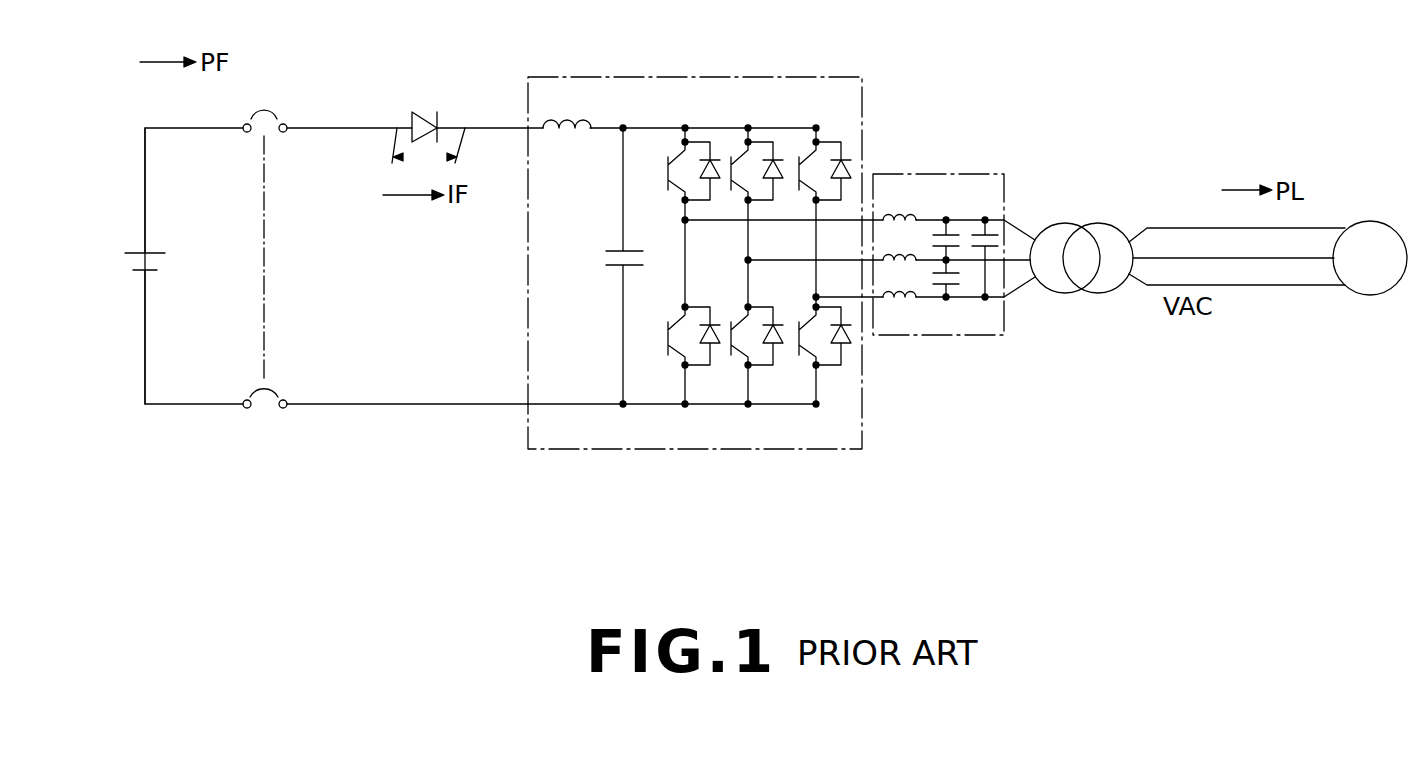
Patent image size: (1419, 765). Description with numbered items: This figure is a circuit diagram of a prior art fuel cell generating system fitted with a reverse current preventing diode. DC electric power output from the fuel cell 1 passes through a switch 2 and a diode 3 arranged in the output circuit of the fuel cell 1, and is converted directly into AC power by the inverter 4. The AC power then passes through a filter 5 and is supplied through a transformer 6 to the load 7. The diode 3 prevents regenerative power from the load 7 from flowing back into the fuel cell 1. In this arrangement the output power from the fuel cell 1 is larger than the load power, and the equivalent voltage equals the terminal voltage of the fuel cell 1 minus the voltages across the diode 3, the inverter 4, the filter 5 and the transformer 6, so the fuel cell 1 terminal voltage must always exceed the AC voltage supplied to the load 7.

The fuel cell 1 is at (136, 262).
The switch 2 is at (268, 109).
The diode 3 is at (426, 112).
The inverter 4 is at (630, 77).
The filter 5 is at (920, 173).
The transformer 6 is at (1060, 223).
The load 7 is at (1367, 221).